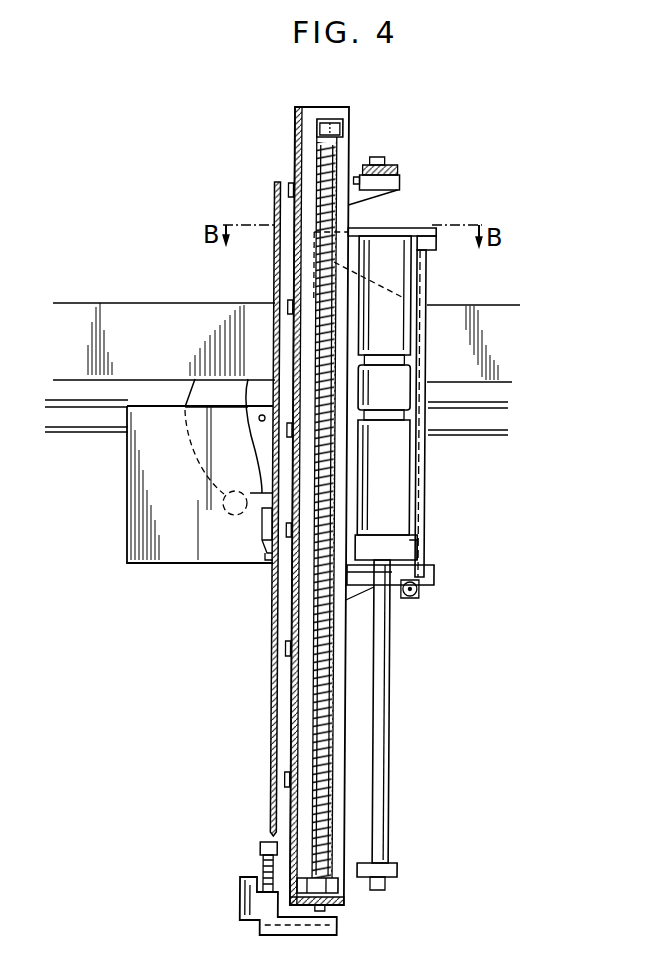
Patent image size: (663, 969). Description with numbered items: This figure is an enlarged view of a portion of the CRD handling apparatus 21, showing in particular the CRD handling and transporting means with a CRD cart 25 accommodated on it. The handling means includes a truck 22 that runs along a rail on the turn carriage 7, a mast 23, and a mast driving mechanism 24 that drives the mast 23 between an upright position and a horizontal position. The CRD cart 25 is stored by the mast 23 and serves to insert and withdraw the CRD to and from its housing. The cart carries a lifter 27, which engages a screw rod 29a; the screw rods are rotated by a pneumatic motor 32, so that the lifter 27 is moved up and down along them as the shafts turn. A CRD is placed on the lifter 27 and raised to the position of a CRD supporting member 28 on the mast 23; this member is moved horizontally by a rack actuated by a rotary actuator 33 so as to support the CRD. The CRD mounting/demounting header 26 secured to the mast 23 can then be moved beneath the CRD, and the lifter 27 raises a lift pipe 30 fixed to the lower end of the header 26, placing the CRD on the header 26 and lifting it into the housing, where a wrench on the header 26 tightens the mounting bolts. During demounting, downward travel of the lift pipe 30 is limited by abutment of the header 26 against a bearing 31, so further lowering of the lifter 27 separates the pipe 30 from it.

The turn carriage 7 is at (78, 437).
The CRD handling apparatus 21 is at (272, 722).
The truck 22 is at (175, 555).
The mast 23 is at (275, 268).
The mast driving mechanism 24 is at (222, 448).
The CRD cart 25 is at (295, 131).
The CRD mounting/demounting header 26 is at (405, 270).
The lifter 27 is at (343, 884).
The CRD supporting member 28 is at (400, 178).
The screw rod 29a is at (337, 150).
The lift pipe 30 is at (395, 782).
The bearing 31 is at (395, 500).
The pneumatic motor 32 is at (264, 848).
The rotary actuator 33 is at (386, 160).